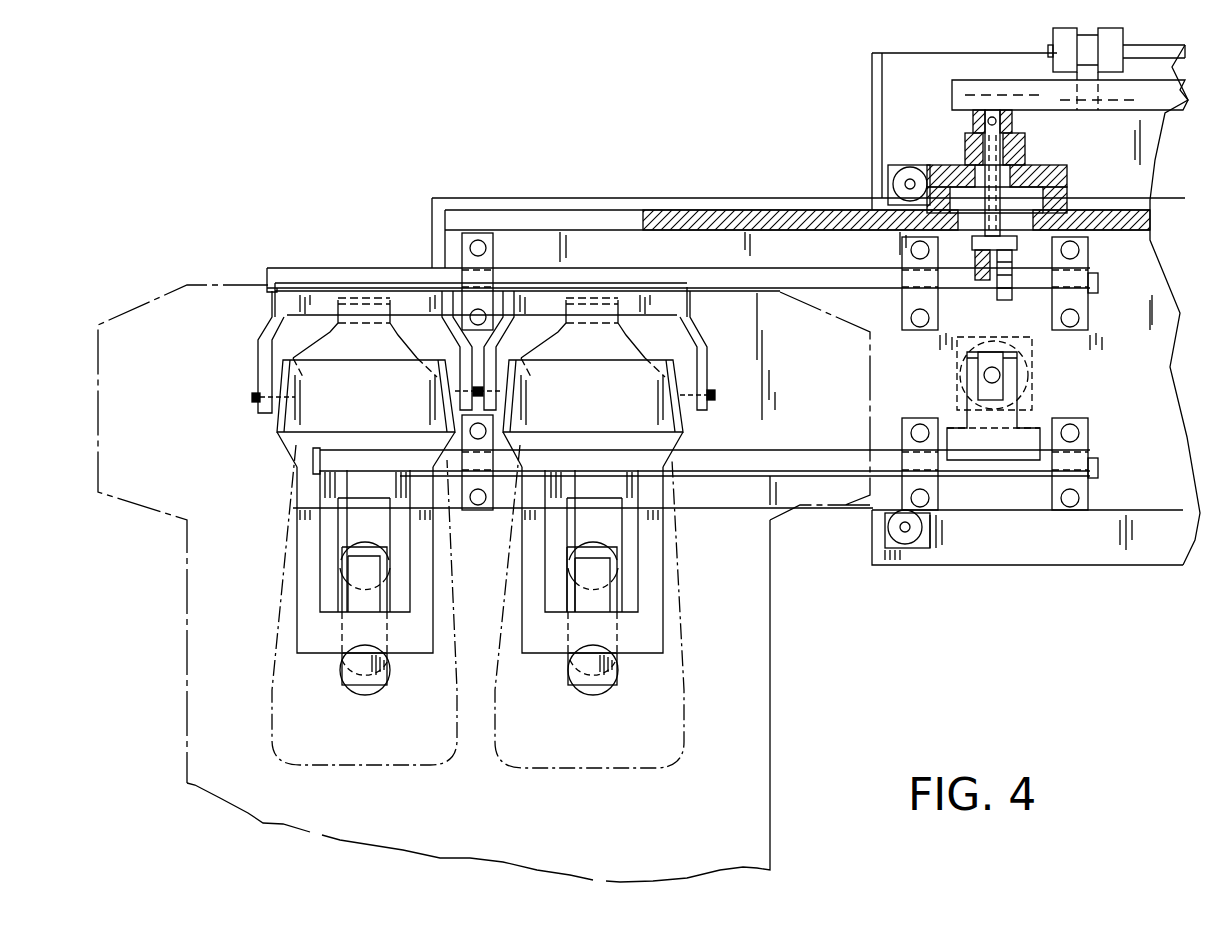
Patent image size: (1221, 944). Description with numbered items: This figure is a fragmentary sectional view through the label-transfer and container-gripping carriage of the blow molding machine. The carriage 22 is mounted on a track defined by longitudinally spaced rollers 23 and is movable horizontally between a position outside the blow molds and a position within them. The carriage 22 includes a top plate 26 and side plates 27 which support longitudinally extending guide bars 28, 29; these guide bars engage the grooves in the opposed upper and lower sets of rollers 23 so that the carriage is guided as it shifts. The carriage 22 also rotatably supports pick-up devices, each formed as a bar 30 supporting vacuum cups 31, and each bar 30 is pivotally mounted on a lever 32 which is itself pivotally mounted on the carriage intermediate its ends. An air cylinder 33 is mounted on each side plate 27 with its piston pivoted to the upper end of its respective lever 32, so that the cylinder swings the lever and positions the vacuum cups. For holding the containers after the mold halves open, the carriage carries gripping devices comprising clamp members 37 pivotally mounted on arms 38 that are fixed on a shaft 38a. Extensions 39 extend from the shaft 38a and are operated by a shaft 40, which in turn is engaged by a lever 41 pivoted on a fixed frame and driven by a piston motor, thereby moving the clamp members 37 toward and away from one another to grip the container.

The carriage 22 is at (1102, 200).
The rollers 23 is at (902, 173).
The top plate 26 is at (1140, 227).
The side plates 27 is at (753, 203).
The guide bar 28 is at (822, 197).
The guide bar 29 is at (847, 508).
The bar 30 is at (372, 668).
The vacuum cups 31 is at (364, 548).
The lever 32 is at (558, 583).
The air cylinder 33 is at (1033, 352).
The clamp members 37 is at (380, 404).
The arms 38 is at (272, 335).
The shaft 38a is at (868, 280).
The extensions 39 is at (976, 265).
The shaft 40 is at (990, 200).
The lever 41 is at (1087, 62).